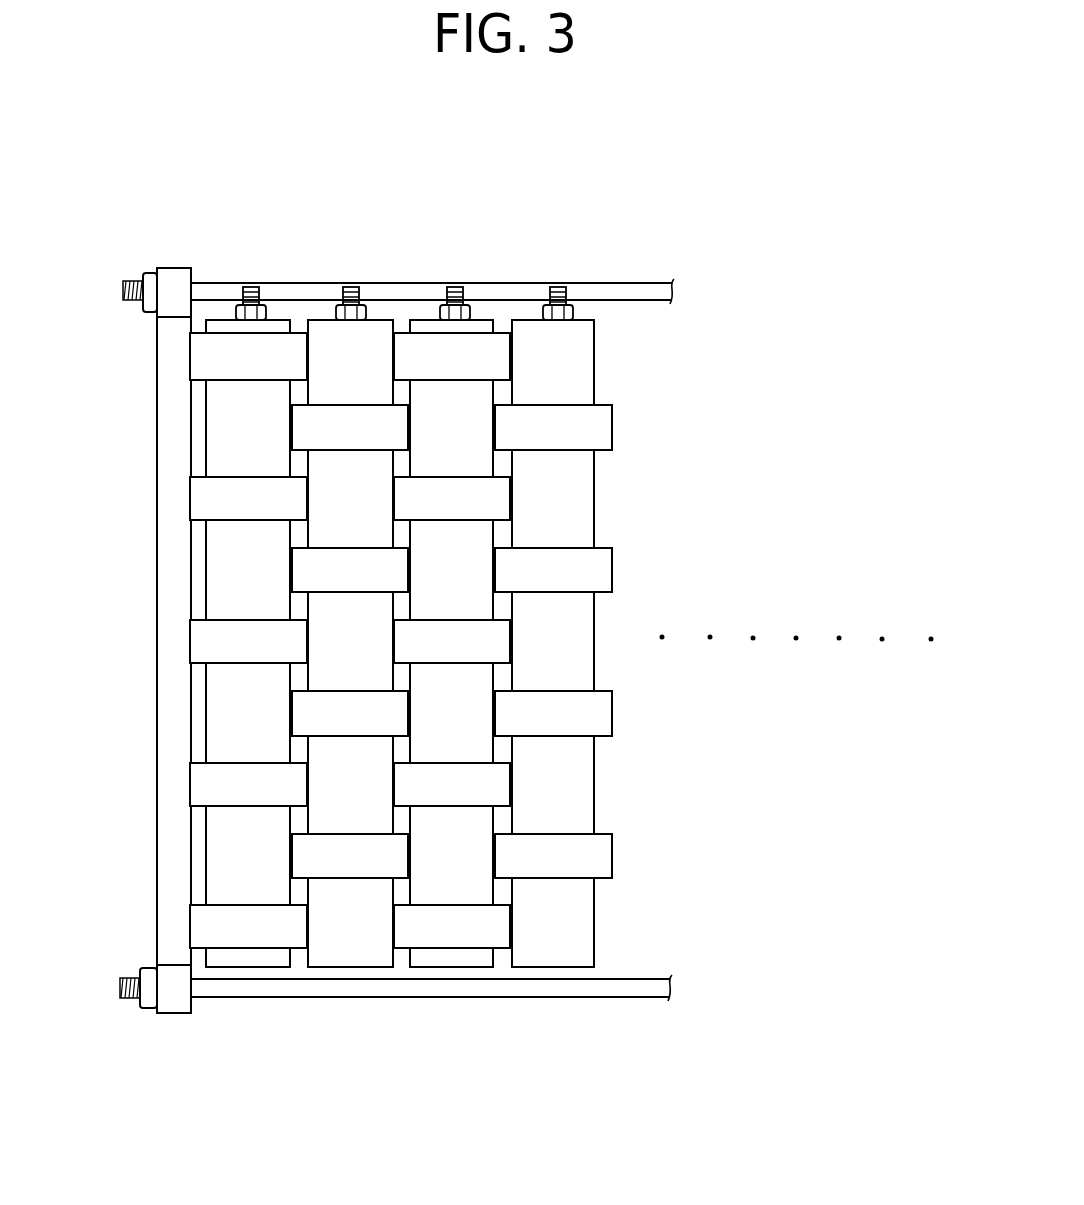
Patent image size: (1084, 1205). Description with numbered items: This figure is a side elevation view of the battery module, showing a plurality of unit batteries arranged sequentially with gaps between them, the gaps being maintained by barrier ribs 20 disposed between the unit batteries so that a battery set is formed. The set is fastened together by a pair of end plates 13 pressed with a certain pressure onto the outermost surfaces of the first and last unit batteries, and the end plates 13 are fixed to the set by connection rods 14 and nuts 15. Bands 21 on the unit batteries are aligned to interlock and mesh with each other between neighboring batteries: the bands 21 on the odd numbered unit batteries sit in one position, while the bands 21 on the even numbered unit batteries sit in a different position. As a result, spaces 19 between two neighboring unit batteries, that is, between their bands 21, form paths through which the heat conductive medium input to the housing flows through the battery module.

The end plate 13 is at (168, 405).
The connection rod 14 is at (330, 288).
The nut 15 is at (153, 273).
The space 19 is at (298, 395).
The barrier rib 20 is at (297, 947).
The band 21 is at (225, 787).